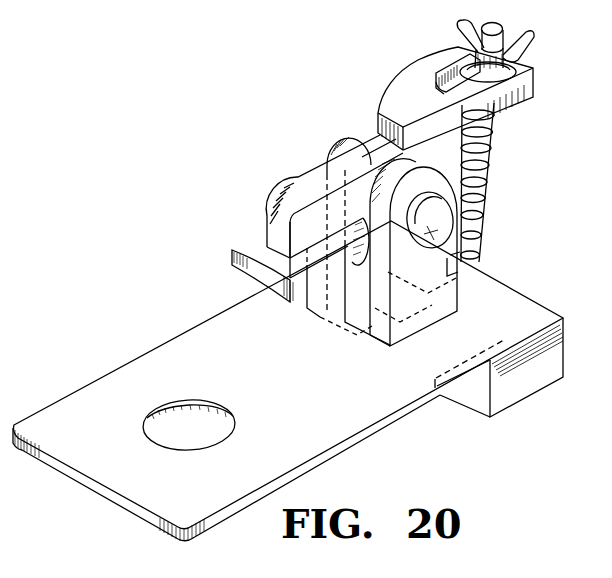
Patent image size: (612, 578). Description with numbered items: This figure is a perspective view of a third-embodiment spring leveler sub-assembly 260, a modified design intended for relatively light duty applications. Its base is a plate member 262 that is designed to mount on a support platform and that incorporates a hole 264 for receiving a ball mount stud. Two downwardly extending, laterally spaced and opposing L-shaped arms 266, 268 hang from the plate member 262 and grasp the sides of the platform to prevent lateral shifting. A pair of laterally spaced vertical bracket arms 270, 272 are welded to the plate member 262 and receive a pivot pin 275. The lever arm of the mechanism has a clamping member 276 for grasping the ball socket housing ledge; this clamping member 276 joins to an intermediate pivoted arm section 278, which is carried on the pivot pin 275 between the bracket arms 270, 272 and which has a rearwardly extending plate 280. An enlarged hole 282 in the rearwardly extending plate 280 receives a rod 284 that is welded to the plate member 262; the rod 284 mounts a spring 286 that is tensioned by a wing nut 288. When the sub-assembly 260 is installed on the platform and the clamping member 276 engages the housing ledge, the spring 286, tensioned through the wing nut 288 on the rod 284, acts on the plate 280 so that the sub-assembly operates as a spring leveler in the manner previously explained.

The spring leveler sub-assembly 260 is at (325, 130).
The plate member 262 is at (134, 482).
The hole 264 is at (232, 416).
The L-shaped arm 266 is at (461, 400).
The L-shaped arm 268 is at (307, 318).
The vertical bracket arm 270 is at (337, 316).
The vertical bracket arm 272 is at (399, 320).
The pivot pin 275 is at (434, 240).
The clamping member 276 is at (254, 250).
The intermediate pivoted arm section 278 is at (300, 192).
The rearwardly extending plate 280 is at (406, 103).
The enlarged hole 282 is at (436, 75).
The rod 284 is at (471, 262).
The spring 286 is at (488, 196).
The wing nut 288 is at (513, 42).